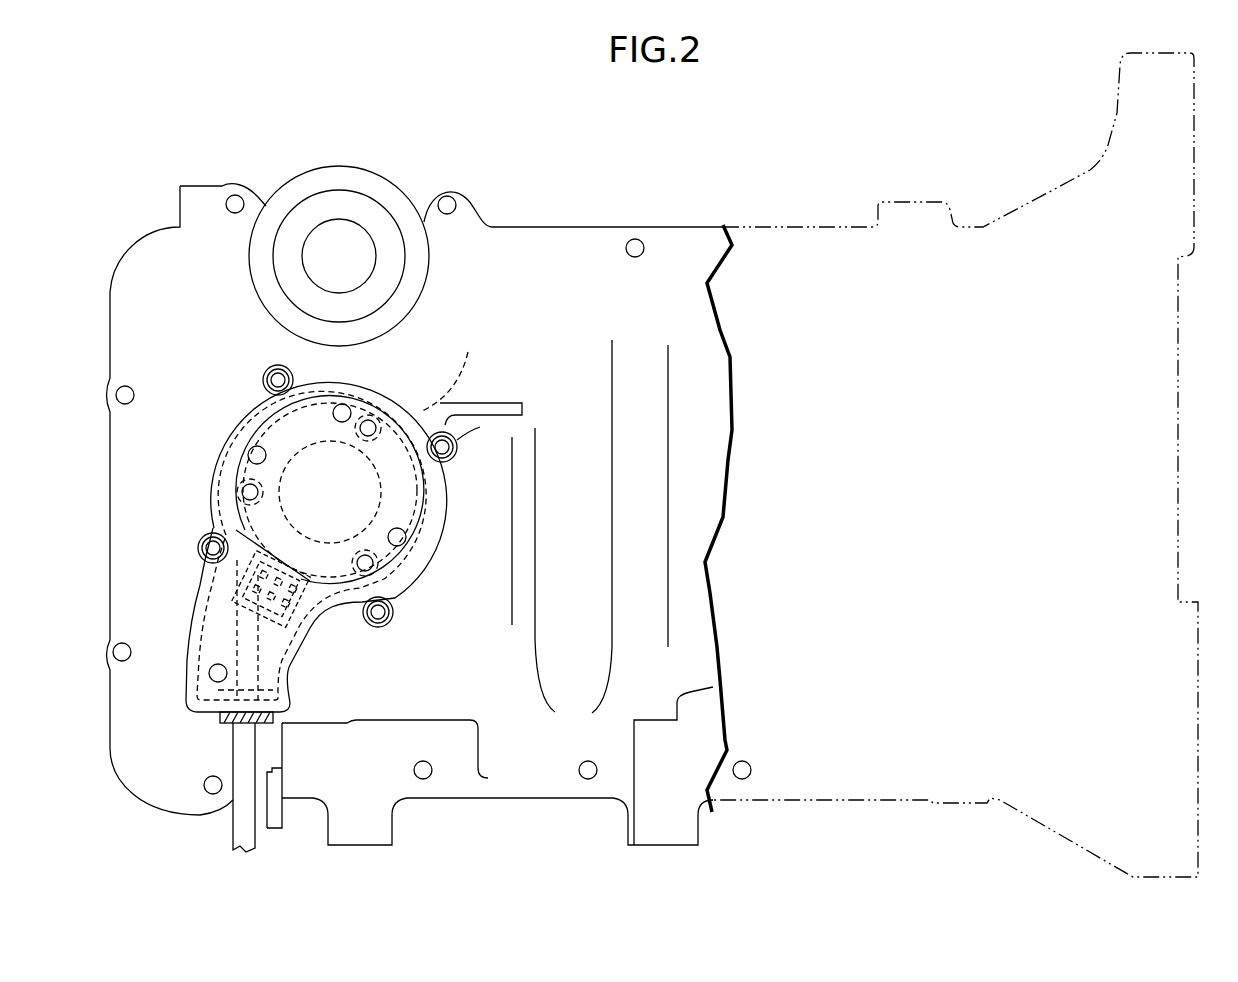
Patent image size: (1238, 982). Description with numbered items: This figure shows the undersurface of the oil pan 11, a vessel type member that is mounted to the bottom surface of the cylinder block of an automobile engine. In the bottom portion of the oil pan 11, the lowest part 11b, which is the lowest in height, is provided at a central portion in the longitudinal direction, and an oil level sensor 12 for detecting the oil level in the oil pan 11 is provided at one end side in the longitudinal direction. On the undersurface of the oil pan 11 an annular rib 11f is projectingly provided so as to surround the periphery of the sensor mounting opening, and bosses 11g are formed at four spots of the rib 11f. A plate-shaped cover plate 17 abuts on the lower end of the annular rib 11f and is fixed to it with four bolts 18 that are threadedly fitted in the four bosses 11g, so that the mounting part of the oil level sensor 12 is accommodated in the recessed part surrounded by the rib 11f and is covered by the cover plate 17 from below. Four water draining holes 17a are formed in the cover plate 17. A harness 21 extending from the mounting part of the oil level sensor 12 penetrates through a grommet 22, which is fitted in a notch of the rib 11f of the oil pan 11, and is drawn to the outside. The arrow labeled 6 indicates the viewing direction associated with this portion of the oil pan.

The oil pump 6 is at (344, 582).
The oil pan 11 is at (572, 223).
The lowest part 11b is at (647, 526).
The annular rib 11f is at (456, 368).
The boss 11g is at (273, 363).
The oil level sensor 12 is at (415, 516).
The cover plate 17 is at (208, 468).
The water draining hole 17a is at (256, 447).
The bolt 18 is at (264, 367).
The harness 21 is at (233, 800).
The grommet 22 is at (230, 722).